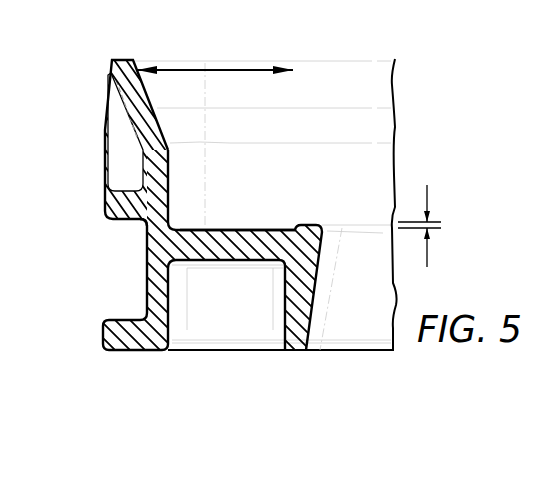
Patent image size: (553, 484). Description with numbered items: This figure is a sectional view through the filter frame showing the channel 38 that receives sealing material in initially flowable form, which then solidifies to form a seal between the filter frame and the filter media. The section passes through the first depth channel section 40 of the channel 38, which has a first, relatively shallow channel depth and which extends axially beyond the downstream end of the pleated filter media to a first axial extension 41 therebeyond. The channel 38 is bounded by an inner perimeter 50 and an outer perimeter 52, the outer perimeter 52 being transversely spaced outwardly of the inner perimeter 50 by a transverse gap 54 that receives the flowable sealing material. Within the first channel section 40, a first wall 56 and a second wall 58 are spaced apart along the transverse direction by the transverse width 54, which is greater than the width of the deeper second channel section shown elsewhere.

The channel 38 is at (244, 226).
The first depth channel section 40 is at (220, 230).
The first axial extension 41 is at (441, 225).
The inner perimeter 50 is at (298, 224).
The outer perimeter 52 is at (131, 60).
The transverse gap 54 is at (228, 72).
The first wall 56 is at (321, 257).
The second wall 58 is at (143, 213).